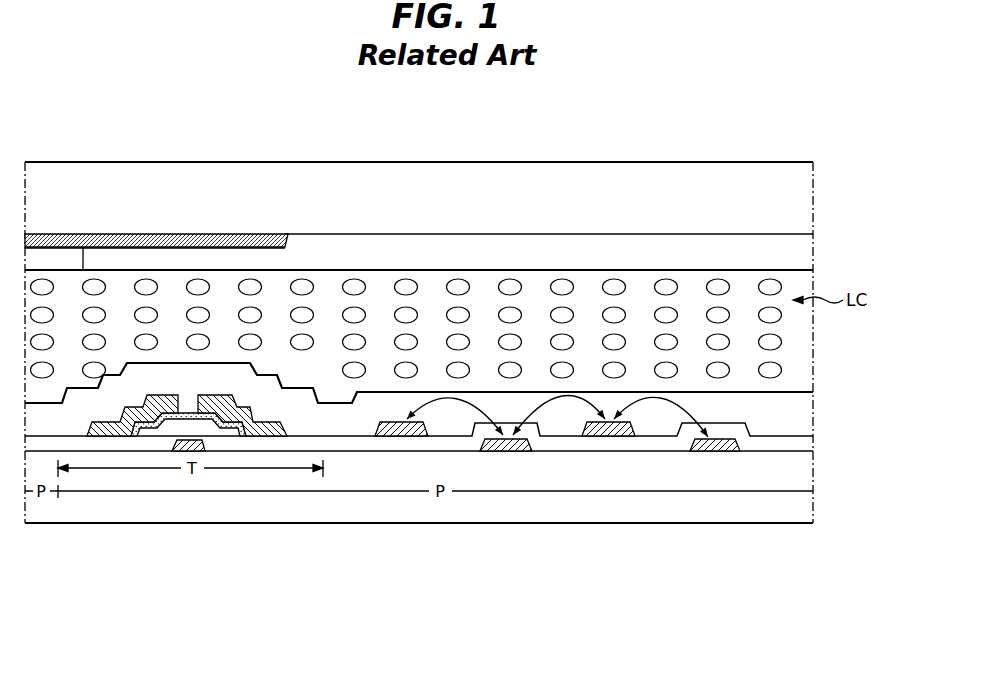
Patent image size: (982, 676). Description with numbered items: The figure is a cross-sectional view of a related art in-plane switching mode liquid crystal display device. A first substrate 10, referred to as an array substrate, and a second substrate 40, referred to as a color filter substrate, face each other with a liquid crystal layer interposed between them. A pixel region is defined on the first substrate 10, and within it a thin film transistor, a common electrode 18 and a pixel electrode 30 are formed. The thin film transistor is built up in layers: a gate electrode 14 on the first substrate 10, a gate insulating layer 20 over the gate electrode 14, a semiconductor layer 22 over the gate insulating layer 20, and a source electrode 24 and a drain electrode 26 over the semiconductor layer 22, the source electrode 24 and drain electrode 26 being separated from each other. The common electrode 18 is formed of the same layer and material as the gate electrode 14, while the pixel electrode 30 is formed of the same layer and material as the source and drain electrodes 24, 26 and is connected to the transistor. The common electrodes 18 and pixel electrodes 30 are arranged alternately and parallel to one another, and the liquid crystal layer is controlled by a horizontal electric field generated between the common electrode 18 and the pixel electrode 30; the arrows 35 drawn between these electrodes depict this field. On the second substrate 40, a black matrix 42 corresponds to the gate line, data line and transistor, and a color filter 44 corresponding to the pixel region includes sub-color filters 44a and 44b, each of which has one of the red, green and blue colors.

The first substrate 10 is at (775, 513).
The gate electrode 14 is at (185, 452).
The common electrode 18 is at (500, 449).
The gate insulating layer 20 is at (365, 445).
The semiconductor layer 22 is at (242, 445).
The source electrode 24 is at (166, 394).
The drain electrode 26 is at (218, 394).
The pixel electrode 30 is at (414, 437).
The electric field 35 is at (578, 395).
The second substrate 40 is at (447, 207).
The black matrix 42 is at (215, 235).
The color filter 44 is at (147, 108).
The sub-color filter 44a is at (68, 258).
The sub-color filter 44b is at (137, 258).